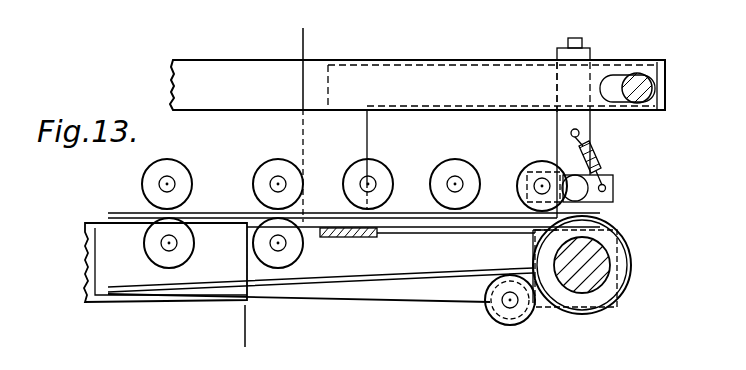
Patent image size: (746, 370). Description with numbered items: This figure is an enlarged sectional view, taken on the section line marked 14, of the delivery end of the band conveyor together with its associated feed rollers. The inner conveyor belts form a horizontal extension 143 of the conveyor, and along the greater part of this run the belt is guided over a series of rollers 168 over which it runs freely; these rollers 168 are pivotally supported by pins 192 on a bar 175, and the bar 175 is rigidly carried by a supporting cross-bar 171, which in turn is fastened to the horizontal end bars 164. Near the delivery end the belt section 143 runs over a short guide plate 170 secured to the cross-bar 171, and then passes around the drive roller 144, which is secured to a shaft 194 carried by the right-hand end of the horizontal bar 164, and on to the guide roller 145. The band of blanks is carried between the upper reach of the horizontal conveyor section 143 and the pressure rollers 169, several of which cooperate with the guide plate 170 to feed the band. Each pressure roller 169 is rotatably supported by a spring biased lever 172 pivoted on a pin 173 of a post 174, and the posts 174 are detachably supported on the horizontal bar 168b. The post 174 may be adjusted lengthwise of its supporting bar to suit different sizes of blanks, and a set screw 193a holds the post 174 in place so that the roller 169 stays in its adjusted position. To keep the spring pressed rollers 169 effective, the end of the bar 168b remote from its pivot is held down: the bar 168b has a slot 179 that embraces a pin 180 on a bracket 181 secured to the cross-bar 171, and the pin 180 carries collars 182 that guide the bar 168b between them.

The horizontal bar 168b is at (233, 68).
The section line 14 is at (320, 46).
The set screw 193a is at (585, 38).
The collar 182 is at (617, 74).
The pin 180 is at (668, 92).
The slot 179 is at (612, 87).
The bracket 181 is at (367, 131).
The post 174 is at (590, 128).
The pressure roller 169 is at (258, 186).
The horizontal extension 143 is at (415, 208).
The spring biased lever 172 is at (613, 181).
The pin 173 is at (598, 200).
The cross-bar 171 is at (346, 238).
The guide plate 170 is at (441, 228).
The drive roller 144 is at (540, 253).
The shaft 194 is at (610, 265).
The pin 192 is at (167, 242).
The roller 168 is at (256, 252).
The bar 175 is at (372, 292).
The horizontal end bar 164 is at (417, 307).
The guide roller 145 is at (512, 326).